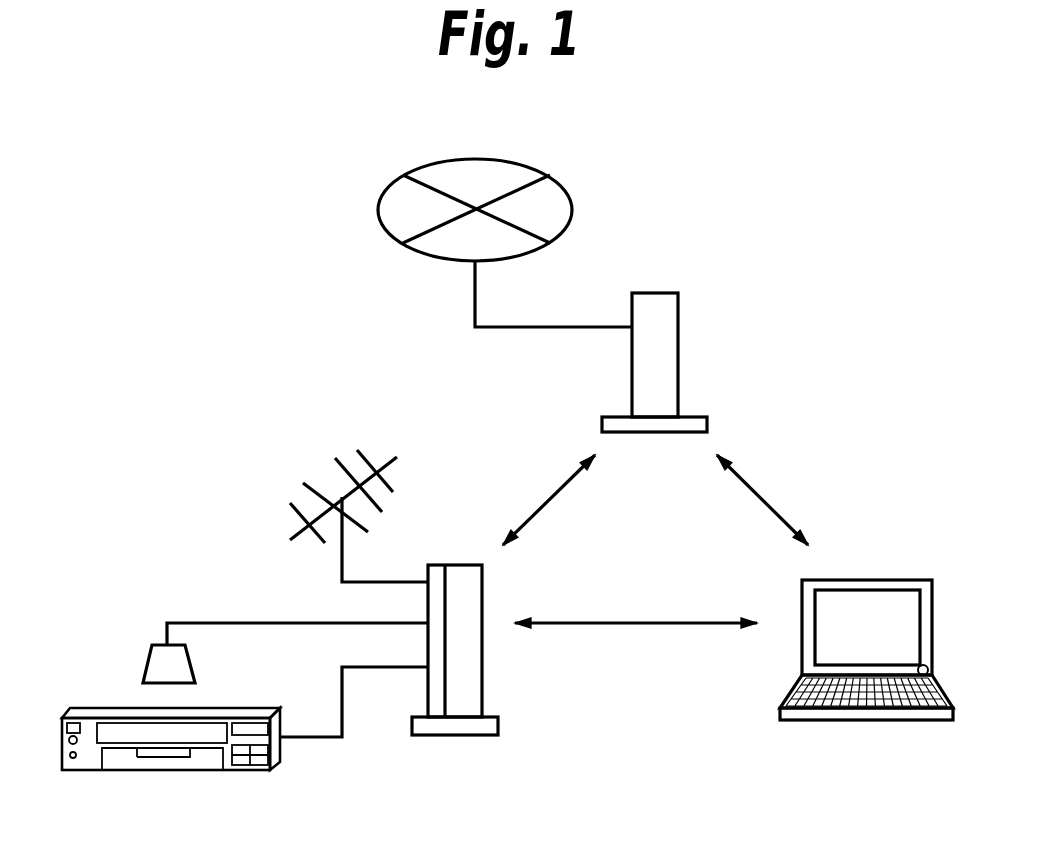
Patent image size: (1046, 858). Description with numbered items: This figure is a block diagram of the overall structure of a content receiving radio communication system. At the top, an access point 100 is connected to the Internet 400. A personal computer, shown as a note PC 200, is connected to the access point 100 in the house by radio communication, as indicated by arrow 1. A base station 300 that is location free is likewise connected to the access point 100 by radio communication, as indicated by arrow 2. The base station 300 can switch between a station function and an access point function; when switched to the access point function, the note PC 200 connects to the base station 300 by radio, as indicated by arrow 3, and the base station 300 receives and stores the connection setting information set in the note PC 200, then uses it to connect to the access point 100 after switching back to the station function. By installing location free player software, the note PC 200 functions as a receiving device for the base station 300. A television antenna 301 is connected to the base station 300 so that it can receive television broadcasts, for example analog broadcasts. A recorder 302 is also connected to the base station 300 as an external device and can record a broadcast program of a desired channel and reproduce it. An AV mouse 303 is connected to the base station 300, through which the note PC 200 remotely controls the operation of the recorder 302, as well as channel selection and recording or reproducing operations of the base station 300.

The Internet 400 is at (475, 158).
The access point 100 is at (680, 350).
The note PC 200 is at (867, 578).
The base station 300 is at (455, 565).
The television antenna 301 is at (322, 470).
The recorder 302 is at (170, 770).
The AV mouse 303 is at (145, 660).
The arrow 1 is at (762, 500).
The arrow 2 is at (549, 500).
The arrow 3 is at (633, 625).